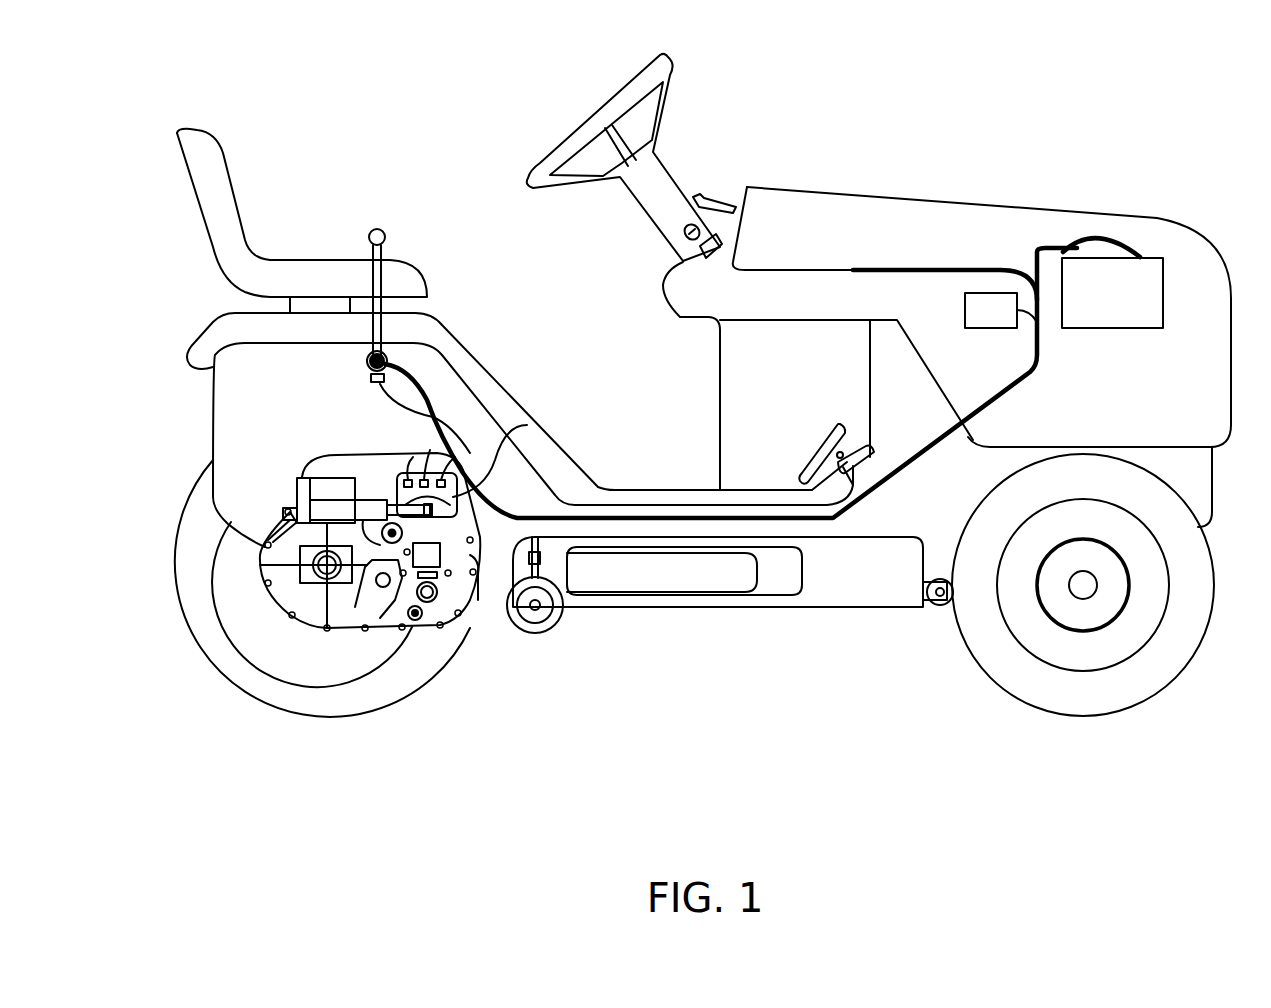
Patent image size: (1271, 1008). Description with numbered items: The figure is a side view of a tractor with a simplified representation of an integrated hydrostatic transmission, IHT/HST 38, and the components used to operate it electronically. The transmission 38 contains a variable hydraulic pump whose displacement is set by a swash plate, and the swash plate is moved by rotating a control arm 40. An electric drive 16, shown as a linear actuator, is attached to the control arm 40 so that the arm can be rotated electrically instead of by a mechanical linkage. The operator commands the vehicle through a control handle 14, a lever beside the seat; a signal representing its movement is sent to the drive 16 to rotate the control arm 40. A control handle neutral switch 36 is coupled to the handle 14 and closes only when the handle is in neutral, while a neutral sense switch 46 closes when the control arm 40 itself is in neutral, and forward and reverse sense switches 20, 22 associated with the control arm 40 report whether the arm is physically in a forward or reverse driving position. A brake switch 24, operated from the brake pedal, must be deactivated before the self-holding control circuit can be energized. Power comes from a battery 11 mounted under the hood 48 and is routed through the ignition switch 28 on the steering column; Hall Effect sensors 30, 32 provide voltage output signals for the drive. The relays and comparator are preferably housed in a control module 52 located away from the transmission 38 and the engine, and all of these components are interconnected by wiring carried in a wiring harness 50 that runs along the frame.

The battery 11 is at (1097, 328).
The control handle 14 is at (370, 252).
The electric drive 16 is at (297, 495).
The forward sense switch 20 is at (527, 425).
The reverse sense switch 22 is at (397, 485).
The brake switch 24 is at (858, 455).
The ignition switch 28 is at (683, 258).
The Hall Effect sensor 30 is at (367, 362).
The Hall Effect sensor 32 is at (427, 623).
The control handle neutral switch 36 is at (375, 383).
The IHT/HST 38 is at (358, 632).
The control arm 40 is at (475, 560).
The neutral sense switch 46 is at (422, 432).
The hood 48 is at (1195, 233).
The wiring harness 50 is at (857, 270).
The control module 52 is at (965, 320).